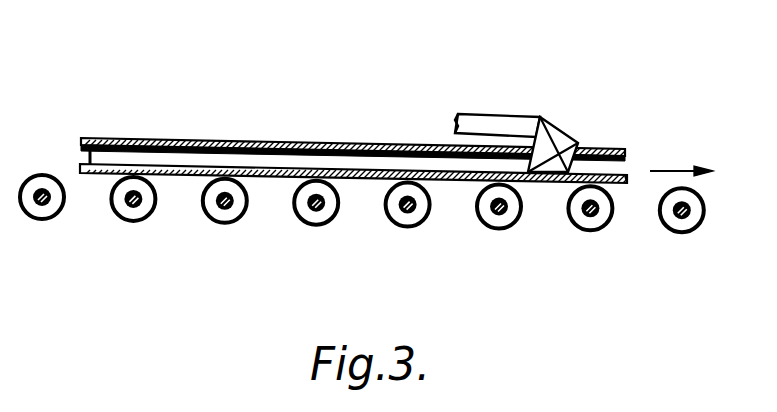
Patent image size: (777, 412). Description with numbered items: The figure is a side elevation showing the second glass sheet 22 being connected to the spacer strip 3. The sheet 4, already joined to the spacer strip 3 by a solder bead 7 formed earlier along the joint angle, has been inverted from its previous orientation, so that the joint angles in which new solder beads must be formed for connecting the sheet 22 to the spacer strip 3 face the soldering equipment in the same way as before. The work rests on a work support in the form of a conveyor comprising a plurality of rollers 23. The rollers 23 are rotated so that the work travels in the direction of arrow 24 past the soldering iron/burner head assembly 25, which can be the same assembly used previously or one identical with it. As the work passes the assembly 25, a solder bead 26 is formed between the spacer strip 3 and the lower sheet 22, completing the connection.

The spacer strip 3 is at (185, 158).
The sheet 4 is at (157, 140).
The solder bead 7 is at (288, 141).
The second glass sheet 22 is at (273, 177).
The rollers 23 is at (489, 221).
The arrow 24 is at (680, 171).
The soldering iron/burner head assembly 25 is at (571, 118).
The solder bead 26 is at (628, 169).